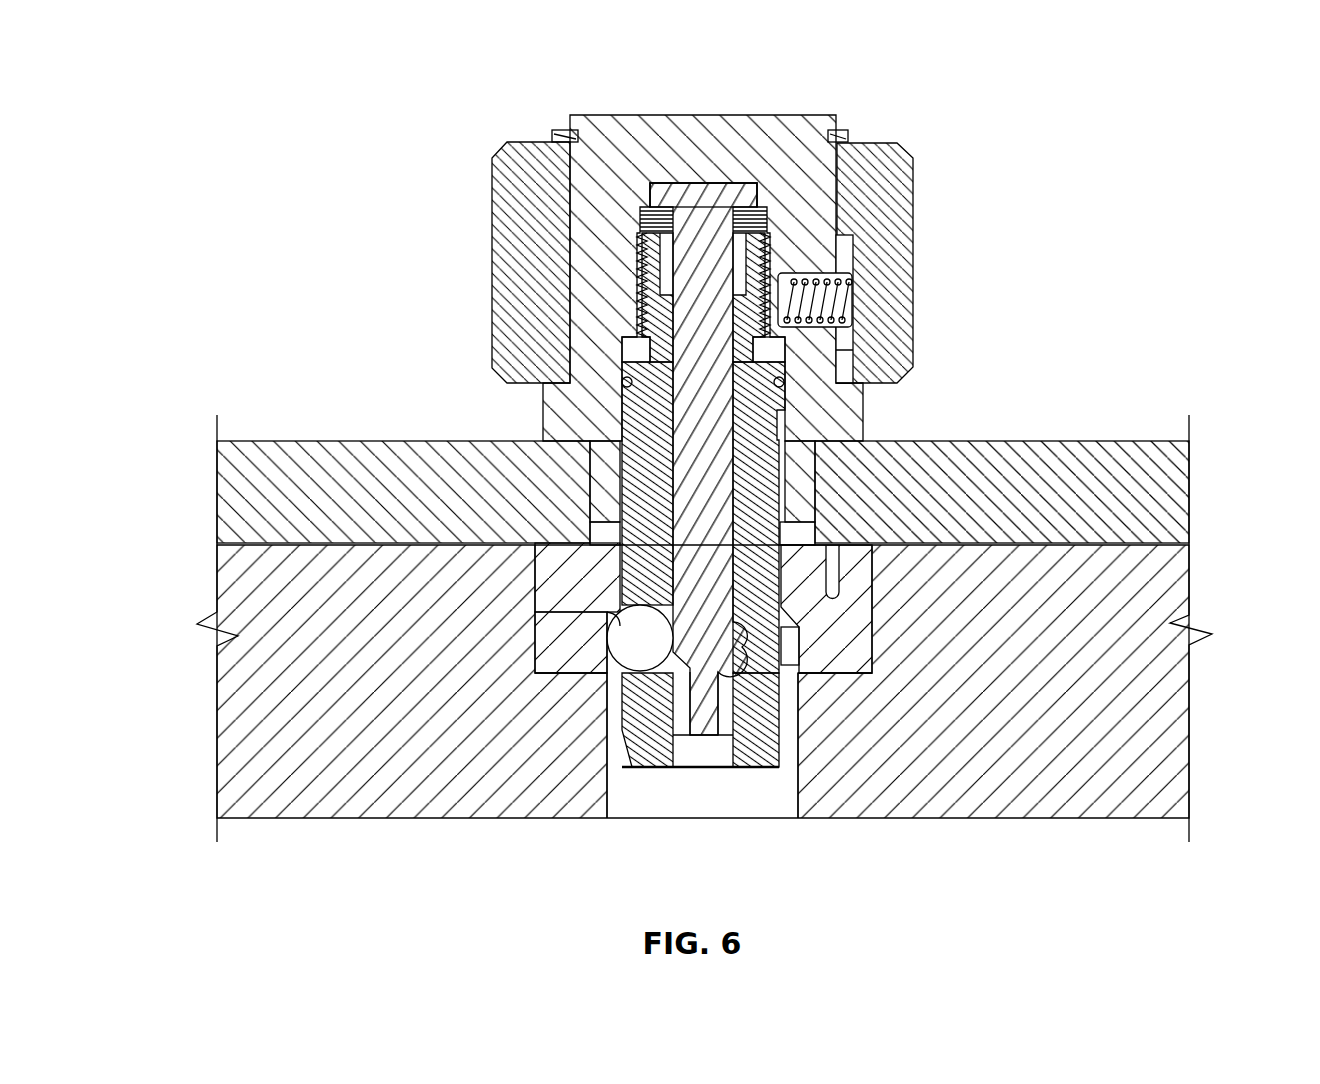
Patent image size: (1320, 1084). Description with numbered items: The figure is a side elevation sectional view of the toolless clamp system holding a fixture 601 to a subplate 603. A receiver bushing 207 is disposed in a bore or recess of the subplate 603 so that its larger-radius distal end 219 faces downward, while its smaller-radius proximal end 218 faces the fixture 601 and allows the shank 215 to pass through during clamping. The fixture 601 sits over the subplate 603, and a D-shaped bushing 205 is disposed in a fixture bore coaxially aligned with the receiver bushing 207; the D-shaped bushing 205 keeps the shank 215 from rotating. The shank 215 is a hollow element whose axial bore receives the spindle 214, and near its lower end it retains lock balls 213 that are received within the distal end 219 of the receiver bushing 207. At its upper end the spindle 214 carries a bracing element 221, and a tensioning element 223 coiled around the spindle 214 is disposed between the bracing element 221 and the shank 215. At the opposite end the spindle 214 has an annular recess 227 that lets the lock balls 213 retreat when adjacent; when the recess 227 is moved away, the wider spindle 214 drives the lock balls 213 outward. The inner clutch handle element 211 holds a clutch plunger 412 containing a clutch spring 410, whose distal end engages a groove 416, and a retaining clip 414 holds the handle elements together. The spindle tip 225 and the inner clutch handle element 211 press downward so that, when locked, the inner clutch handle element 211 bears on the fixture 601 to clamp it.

The D-shaped bushing 205 is at (612, 468).
The receiver bushing 207 is at (900, 190).
The inner clutch handle element 211 is at (763, 115).
The lock balls 213 is at (603, 663).
The spindle 214 is at (693, 217).
The shank 215 is at (752, 432).
The proximal end 218 is at (552, 613).
The distal end 219 is at (630, 652).
The bracing element 221 is at (727, 183).
The tensioning element 223 is at (640, 215).
The pin tip 225 is at (707, 737).
The annular recess 227 is at (677, 692).
The clutch spring 410 is at (835, 303).
The clutch plunger 412 is at (852, 290).
The retaining clip 414 is at (850, 137).
The groove 416 is at (845, 360).
The fixture 601 is at (1174, 494).
The subplate 603 is at (1174, 690).